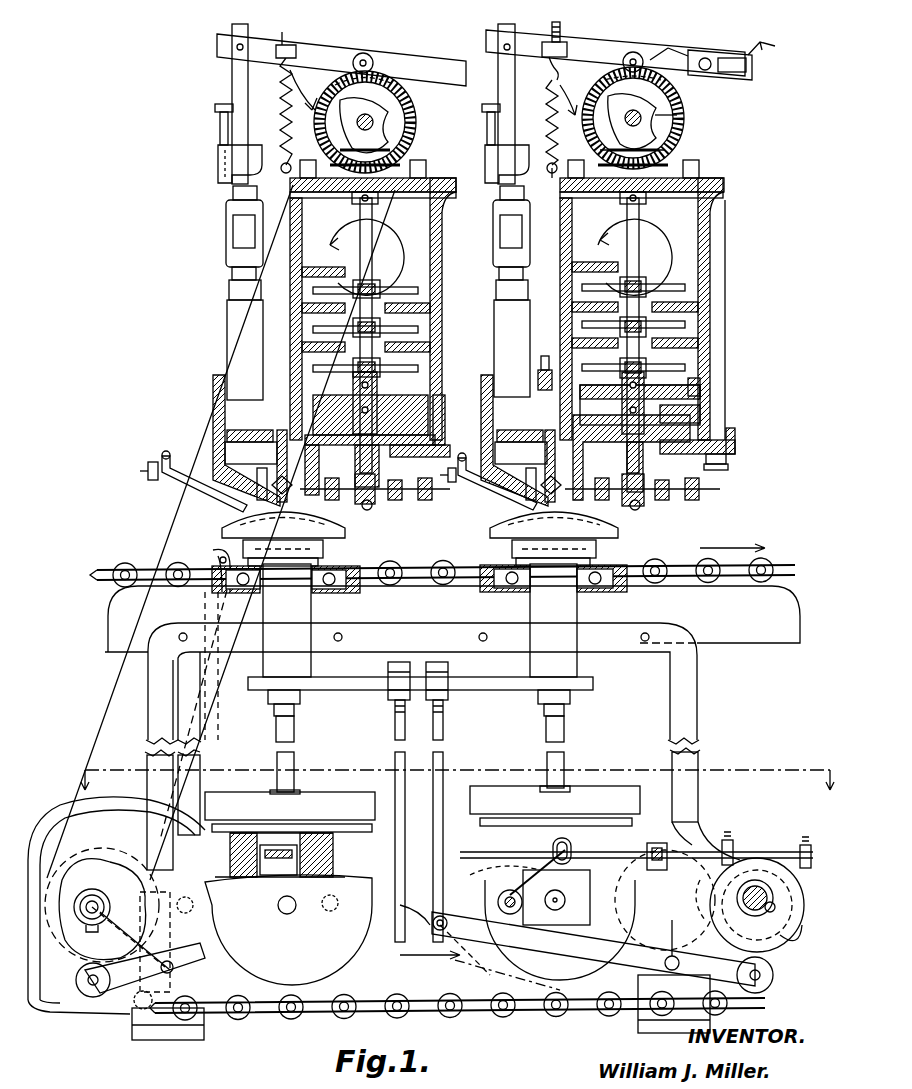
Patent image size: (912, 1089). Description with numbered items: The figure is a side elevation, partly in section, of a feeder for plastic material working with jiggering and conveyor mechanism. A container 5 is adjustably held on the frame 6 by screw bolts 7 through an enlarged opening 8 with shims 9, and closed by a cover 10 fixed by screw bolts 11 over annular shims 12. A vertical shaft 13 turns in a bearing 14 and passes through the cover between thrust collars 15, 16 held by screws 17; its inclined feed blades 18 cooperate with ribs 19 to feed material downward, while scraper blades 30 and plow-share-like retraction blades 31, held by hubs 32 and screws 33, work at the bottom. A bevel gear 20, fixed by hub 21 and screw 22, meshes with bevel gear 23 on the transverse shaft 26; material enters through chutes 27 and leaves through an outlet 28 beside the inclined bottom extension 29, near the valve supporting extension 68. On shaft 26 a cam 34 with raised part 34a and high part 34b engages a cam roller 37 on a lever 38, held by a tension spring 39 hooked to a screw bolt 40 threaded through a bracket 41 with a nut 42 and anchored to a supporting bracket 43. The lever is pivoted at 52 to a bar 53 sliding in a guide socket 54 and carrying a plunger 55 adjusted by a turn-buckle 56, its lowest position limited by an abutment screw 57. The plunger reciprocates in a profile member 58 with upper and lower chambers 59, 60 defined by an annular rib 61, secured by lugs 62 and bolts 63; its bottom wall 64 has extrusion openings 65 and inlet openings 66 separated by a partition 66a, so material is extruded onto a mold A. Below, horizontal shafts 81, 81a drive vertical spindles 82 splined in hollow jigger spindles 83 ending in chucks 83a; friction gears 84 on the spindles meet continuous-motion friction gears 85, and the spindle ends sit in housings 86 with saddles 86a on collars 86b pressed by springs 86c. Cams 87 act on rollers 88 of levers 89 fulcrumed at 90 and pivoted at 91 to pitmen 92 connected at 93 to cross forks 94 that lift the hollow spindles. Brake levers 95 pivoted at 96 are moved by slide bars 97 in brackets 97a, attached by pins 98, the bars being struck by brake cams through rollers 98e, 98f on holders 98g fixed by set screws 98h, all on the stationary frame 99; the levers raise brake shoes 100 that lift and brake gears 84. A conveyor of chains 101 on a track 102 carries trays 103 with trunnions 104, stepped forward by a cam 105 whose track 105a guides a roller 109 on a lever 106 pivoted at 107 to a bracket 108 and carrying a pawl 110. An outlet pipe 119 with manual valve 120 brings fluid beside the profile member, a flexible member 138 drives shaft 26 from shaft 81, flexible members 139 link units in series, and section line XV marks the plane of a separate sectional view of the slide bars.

The container 5 is at (710, 262).
The frame 6 is at (735, 446).
The screw bolts 7 is at (714, 470).
The enlarged opening 8 is at (716, 464).
The shims 9 is at (728, 440).
The cover 10 is at (723, 194).
The screw bolts 11 is at (700, 168).
The annular shims 12 is at (675, 281).
The shaft 13 is at (640, 254).
The bearing 14 is at (700, 414).
The thrust or bearing collar 15 is at (645, 200).
The thrust or bearing collar 16 is at (723, 186).
The screws 17 is at (625, 210).
The inclined feed blades 18 is at (672, 286).
The ribs 19 is at (595, 262).
The bevel gear 20 is at (672, 164).
The hub 21 is at (560, 164).
The screw 22 is at (616, 200).
The bevel gear 23 is at (677, 113).
The shaft 26 is at (633, 118).
The chutes 27 is at (372, 232).
The outlet 28 is at (575, 418).
The inclined bottom wall extension 29 is at (627, 455).
The scraper blades 30 is at (700, 385).
The retraction blades 31 is at (702, 402).
The hubs 32 is at (622, 381).
The screws 33 is at (645, 381).
The cam 34 is at (347, 64).
The raised part 34a is at (353, 121).
The high part 34b is at (370, 92).
The cam roller 37 is at (688, 58).
The lever 38 is at (628, 53).
The tension spring 39 is at (548, 106).
The hooked screw bolt 40 is at (550, 72).
The bracket 41 is at (567, 50).
The nut 42 is at (560, 32).
The supporting bracket 43 is at (720, 131).
The pivot 52 is at (217, 52).
The rod or bar 53 is at (232, 84).
The guide socket 54 is at (218, 166).
The plunger 55 is at (227, 336).
The turn-buckle 56 is at (226, 238).
The abutment screw 57 is at (220, 129).
The profile member 58 is at (213, 381).
The upper chamber 59 is at (496, 418).
The lower chamber 60 is at (529, 466).
The annular rib 61 is at (483, 420).
The lugs 62 is at (546, 356).
The bolts 63 is at (530, 357).
The bottom wall 64 is at (515, 500).
The feed or extrusion openings 65 is at (250, 469).
The inlet openings 66 is at (283, 541).
The wall or partition 66a is at (263, 478).
The valve supporting extension 68 is at (640, 508).
The shaft 81 is at (85, 915).
The shaft 81a is at (745, 904).
The spindles 82 is at (566, 758).
The hollow jigger spindles 83 is at (577, 660).
The chucks 83a is at (600, 548).
The friction disks or gears 84 is at (516, 790).
The friction disks or gears 85 is at (512, 968).
The housings 86 is at (580, 920).
The saddles 86a is at (331, 805).
The collars 86b is at (255, 888).
The springs 86c is at (290, 812).
The cams 87 is at (112, 868).
The cam rollers 88 is at (93, 997).
The levers 89 is at (375, 962).
The fulcrum 90 is at (662, 945).
The pivot 91 is at (428, 965).
The pitmen 92 is at (443, 726).
The adjustable connection 93 is at (450, 668).
The cross forks 94 is at (503, 690).
The brake levers 95 is at (556, 880).
The pivot 96 is at (505, 893).
The slide bars 97 is at (667, 850).
The brackets 97a is at (665, 900).
The pins 98 is at (553, 852).
The roller 98e is at (715, 905).
The roller 98f is at (795, 895).
The holders or fingers 98g is at (800, 848).
The set screws 98h is at (733, 845).
The stationary frame 99 is at (698, 758).
The brake shoes 100 is at (555, 806).
The flexible members or chains 101 is at (764, 558).
The track 102 is at (790, 643).
The trays 103 is at (330, 596).
The projecting trunnions 104 is at (272, 596).
The cam 105 is at (55, 800).
The track 105a is at (110, 803).
The lever 106 is at (200, 760).
The pivot 107 is at (135, 1008).
The bracket 108 is at (204, 1022).
The cam roller 109 is at (258, 930).
The adjustable length pawl 110 is at (213, 550).
The outlet pipe 119 is at (200, 496).
The manual control valve 120 is at (135, 473).
The flexible member 138 is at (118, 684).
The flexible members 139 is at (472, 180).
The molds A is at (345, 530).
The section line XV is at (641, 759).